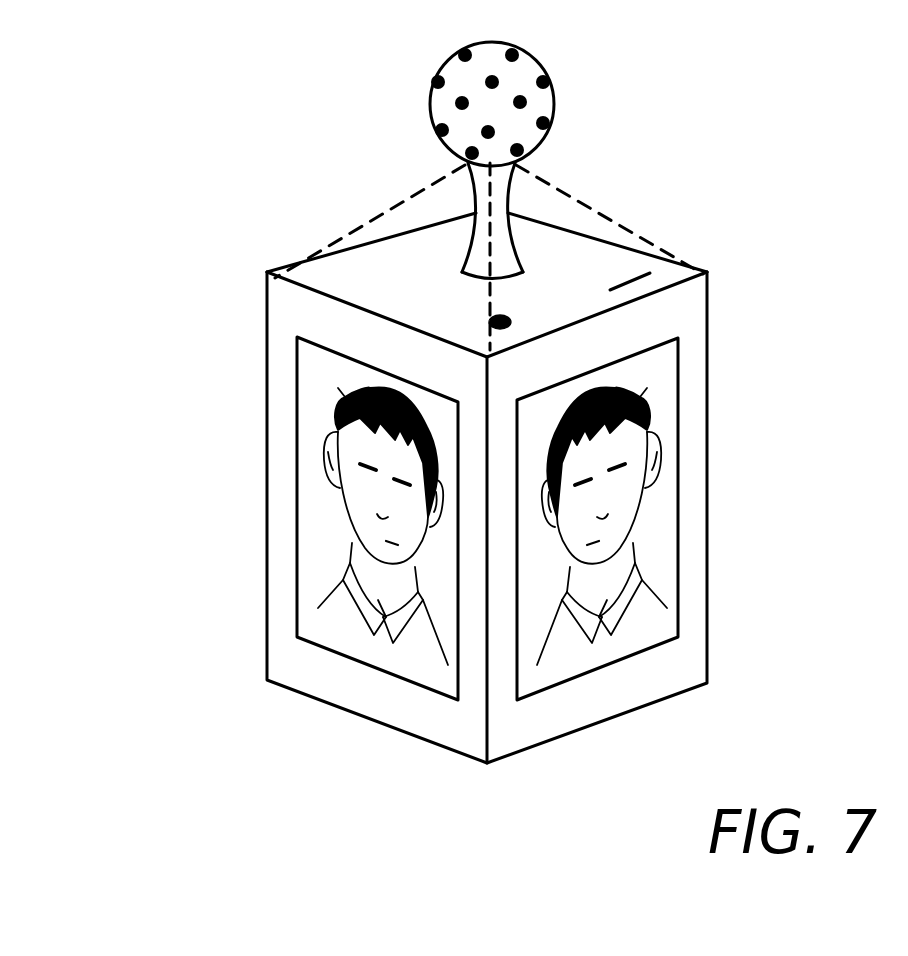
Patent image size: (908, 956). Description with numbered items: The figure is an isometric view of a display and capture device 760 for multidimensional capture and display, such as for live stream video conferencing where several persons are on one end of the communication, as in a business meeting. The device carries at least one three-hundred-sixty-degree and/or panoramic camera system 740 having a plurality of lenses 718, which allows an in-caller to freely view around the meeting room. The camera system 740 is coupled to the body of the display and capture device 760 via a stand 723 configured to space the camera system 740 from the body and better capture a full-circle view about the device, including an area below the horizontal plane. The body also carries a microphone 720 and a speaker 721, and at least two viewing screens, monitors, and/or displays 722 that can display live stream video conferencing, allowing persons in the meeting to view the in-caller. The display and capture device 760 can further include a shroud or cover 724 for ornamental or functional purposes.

The lenses 718 is at (460, 103).
The microphone 720 is at (503, 328).
The speaker 721 is at (637, 280).
The viewing screens, monitors, and/or displays 722 is at (330, 560).
The stand 723 is at (480, 247).
The shroud or cover 724 is at (607, 224).
The 360-degree and/or panoramic camera system 740 is at (573, 60).
The display and capture device 760 is at (162, 425).